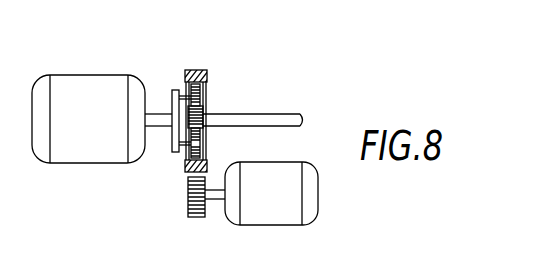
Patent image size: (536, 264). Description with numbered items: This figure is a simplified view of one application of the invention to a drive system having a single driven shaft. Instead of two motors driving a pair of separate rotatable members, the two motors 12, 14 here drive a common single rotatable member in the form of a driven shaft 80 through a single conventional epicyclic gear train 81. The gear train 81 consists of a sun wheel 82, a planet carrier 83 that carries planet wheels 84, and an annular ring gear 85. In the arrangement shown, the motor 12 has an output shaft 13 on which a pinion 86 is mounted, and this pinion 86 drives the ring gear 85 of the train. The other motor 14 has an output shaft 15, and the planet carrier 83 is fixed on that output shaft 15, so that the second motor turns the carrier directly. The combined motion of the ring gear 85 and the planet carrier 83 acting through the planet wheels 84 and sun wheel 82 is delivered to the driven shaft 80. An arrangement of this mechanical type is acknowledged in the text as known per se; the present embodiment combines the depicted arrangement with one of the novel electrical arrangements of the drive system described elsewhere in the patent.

The motor 12 is at (283, 210).
The output shaft of the motor 12 13 is at (217, 201).
The motor 14 is at (98, 137).
The output shaft of the motor 14 15 is at (158, 113).
The driven shaft 80 is at (296, 114).
The epicyclic gear train 81 is at (196, 66).
The sun wheel 82 is at (203, 112).
The planet carrier 83 is at (173, 152).
The planet wheels 84 is at (207, 154).
The annular ring gear 85 is at (208, 77).
The pinion 86 is at (189, 209).